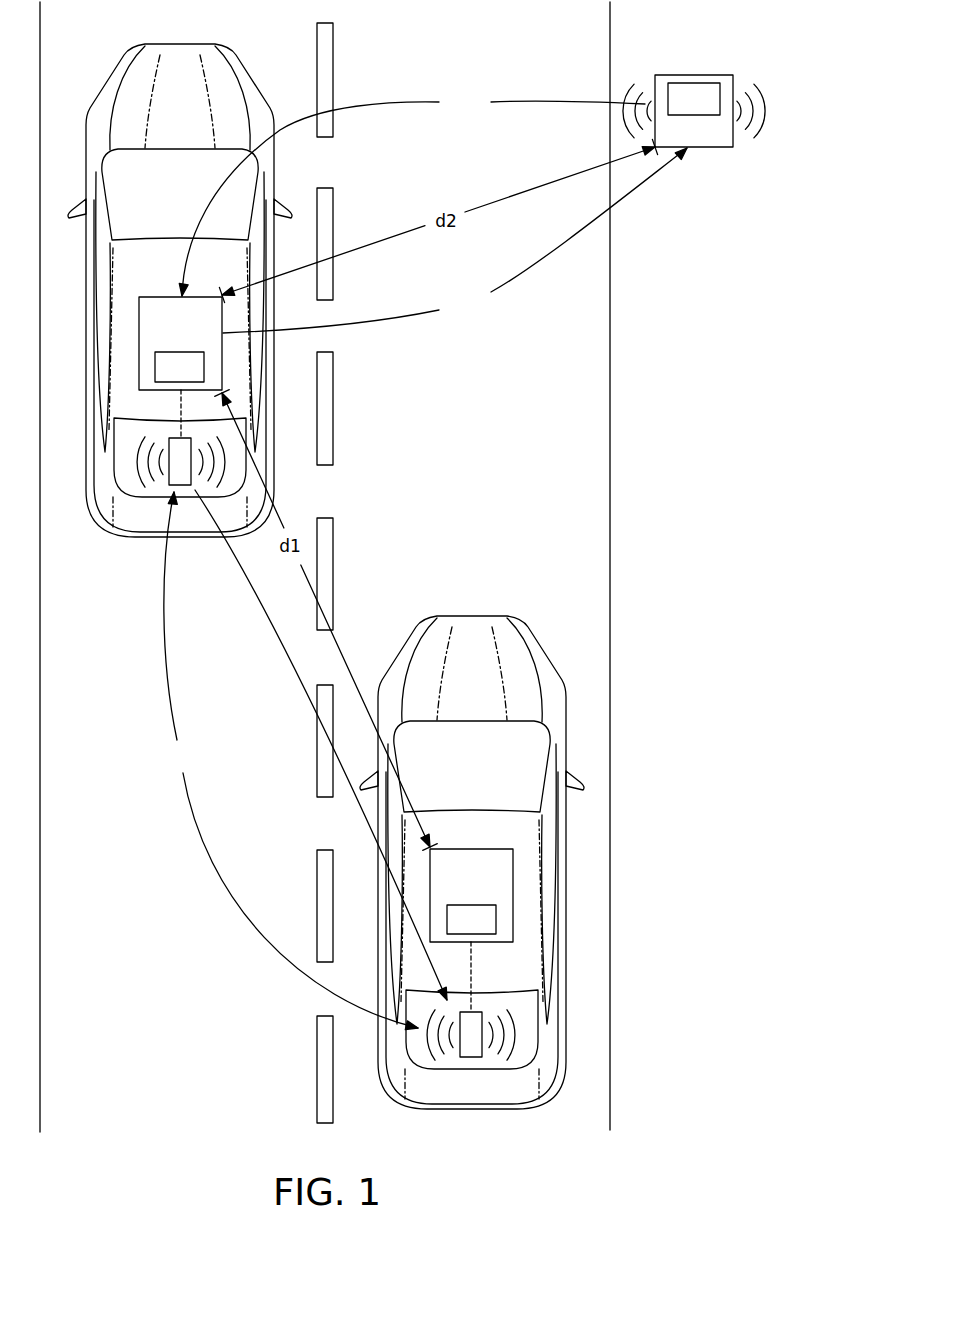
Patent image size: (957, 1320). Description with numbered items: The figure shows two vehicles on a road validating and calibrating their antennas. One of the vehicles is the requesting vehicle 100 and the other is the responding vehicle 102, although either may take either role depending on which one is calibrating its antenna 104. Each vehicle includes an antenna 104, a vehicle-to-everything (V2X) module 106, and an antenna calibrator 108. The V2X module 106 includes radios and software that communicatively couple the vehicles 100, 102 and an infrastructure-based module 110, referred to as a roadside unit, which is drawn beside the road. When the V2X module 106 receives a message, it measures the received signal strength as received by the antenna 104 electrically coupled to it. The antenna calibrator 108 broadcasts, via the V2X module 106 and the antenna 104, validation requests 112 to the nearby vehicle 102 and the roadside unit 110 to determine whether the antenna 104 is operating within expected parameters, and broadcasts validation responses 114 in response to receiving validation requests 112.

The requesting vehicle 100 is at (238, 62).
The responding vehicle 102 is at (530, 633).
The antenna 104 is at (169, 483).
The vehicle-to-everything (V2X) module 106 is at (158, 297).
The antenna calibrator 108 is at (164, 378).
The infrastructure-based module (roadside unit) 110 is at (715, 148).
The validation request 112 is at (449, 306).
The validation response 114 is at (449, 113).